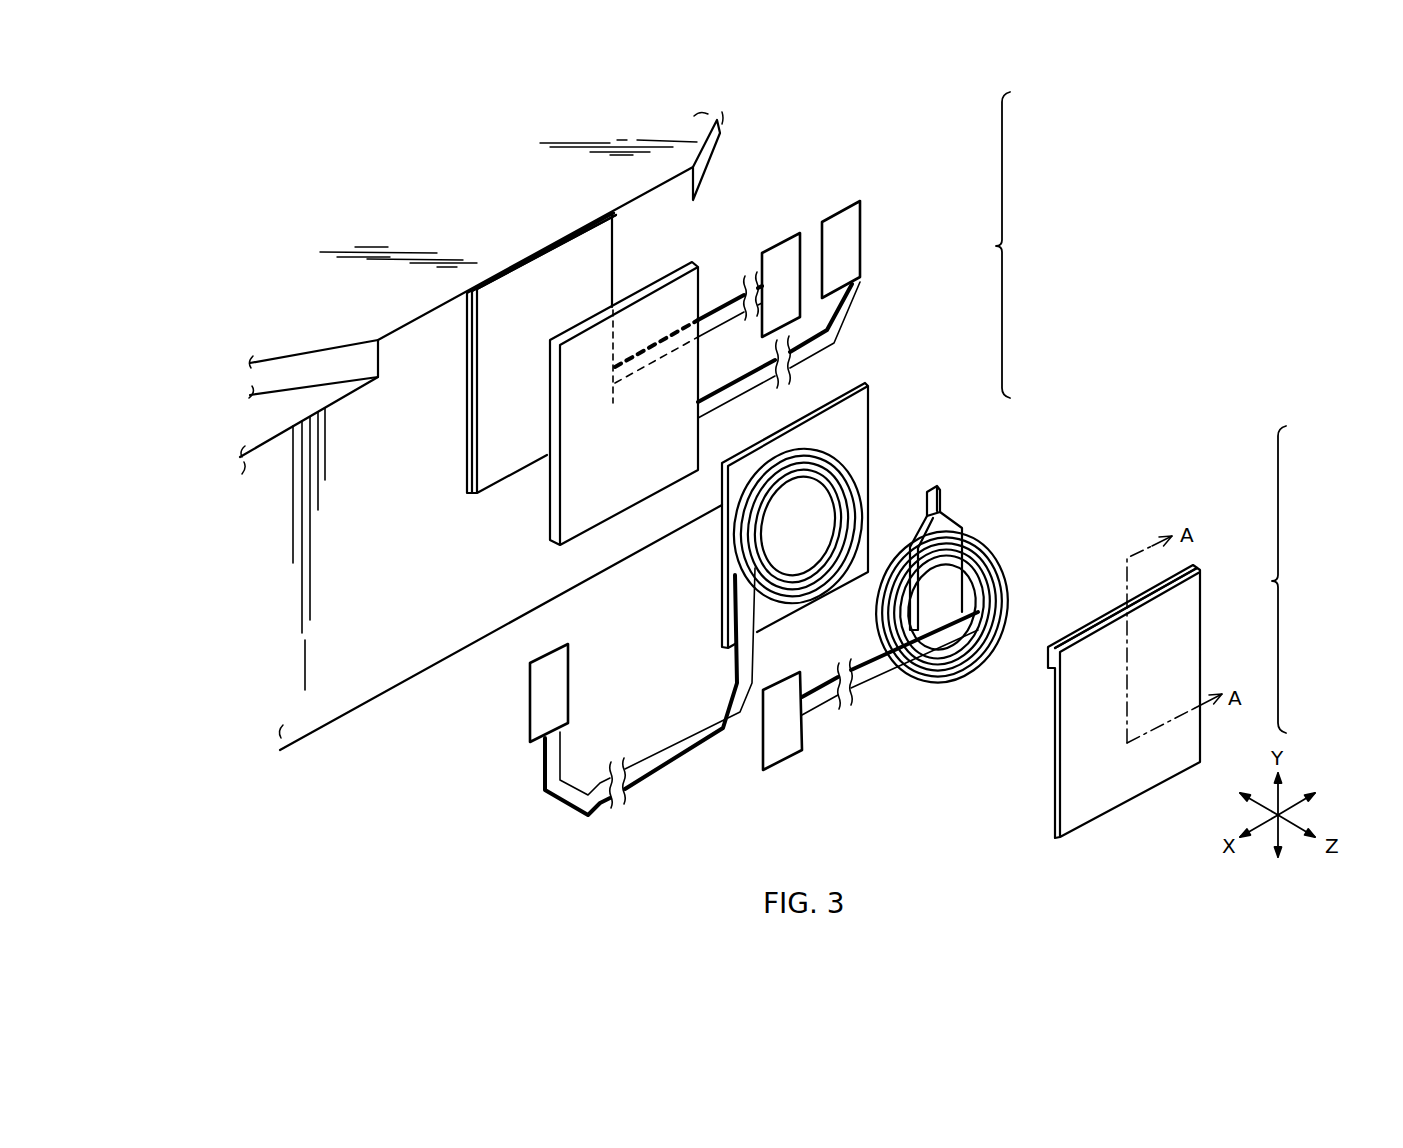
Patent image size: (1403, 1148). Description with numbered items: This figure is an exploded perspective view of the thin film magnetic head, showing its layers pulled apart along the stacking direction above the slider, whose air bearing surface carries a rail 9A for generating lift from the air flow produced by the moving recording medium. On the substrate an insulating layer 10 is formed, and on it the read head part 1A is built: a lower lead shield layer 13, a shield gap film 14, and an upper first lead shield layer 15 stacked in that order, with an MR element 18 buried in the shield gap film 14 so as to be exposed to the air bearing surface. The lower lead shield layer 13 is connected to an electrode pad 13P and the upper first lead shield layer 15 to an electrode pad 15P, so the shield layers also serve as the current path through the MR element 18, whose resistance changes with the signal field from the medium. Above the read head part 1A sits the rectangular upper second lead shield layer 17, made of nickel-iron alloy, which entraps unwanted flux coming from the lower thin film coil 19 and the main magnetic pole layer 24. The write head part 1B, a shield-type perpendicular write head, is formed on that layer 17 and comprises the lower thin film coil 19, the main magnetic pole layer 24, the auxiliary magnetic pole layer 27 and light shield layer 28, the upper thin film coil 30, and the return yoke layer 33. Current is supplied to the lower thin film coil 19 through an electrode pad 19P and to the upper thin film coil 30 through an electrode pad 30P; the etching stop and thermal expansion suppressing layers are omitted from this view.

The rail 9A is at (456, 208).
The insulating layer 10 is at (313, 727).
The lower lead shield layer 13 is at (548, 249).
The shield gap film 14 is at (552, 258).
The MR element 18 is at (556, 268).
The upper first lead shield layer 15 is at (645, 308).
The electrode pad 13P is at (778, 313).
The electrode pad 15P is at (850, 272).
The upper second lead shield layer 17 is at (855, 405).
The lower thin film coil 19 is at (853, 467).
The electrode pad 19P is at (533, 704).
The main magnetic pole layer 24 is at (938, 503).
The auxiliary magnetic pole layer 27 is at (988, 553).
The upper thin film coil 30 is at (953, 575).
The electrode pad 30P is at (792, 752).
The light shield layer 28 is at (1095, 622).
The return yoke layer 33 is at (1073, 748).
The read head part 1A is at (1017, 245).
The write head part 1B is at (1294, 579).